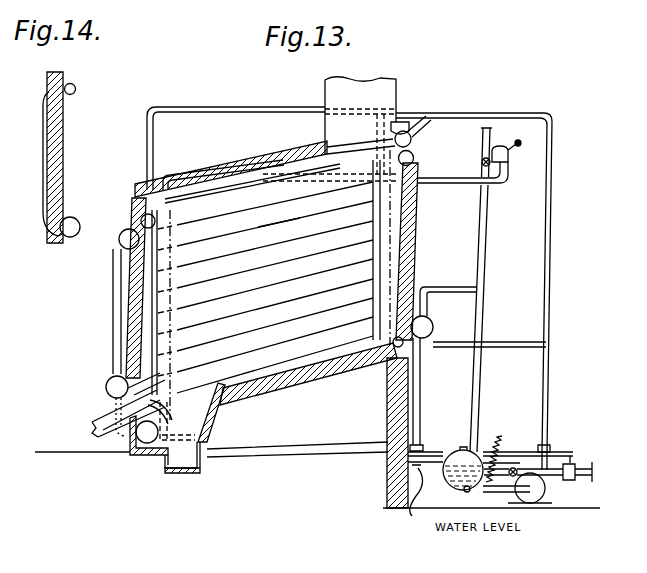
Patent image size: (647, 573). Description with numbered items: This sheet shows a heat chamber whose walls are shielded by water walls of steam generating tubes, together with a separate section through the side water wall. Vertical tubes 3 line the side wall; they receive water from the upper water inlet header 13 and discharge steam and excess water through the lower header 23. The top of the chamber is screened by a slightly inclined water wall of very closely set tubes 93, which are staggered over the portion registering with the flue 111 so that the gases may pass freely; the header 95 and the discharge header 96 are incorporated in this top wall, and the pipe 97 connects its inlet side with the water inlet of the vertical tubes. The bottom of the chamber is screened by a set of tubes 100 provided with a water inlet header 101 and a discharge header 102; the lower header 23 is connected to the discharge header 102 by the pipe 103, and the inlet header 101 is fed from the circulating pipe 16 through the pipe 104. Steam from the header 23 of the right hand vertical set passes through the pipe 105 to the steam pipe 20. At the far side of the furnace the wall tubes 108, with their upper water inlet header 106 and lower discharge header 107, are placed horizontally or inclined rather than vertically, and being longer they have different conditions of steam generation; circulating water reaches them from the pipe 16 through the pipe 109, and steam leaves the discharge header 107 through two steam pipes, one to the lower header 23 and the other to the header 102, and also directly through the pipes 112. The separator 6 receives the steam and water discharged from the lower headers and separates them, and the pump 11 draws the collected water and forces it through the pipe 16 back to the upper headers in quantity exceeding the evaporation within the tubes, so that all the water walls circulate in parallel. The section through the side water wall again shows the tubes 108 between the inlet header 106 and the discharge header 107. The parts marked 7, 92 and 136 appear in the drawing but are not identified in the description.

In FIG. 13, the tubes 3 is at (129, 313).
In FIG. 13, the steam and water separator 6 is at (450, 481).
In FIG. 13, the valve 7 is at (500, 446).
In FIG. 13, the pump 11 is at (545, 494).
In FIG. 13, the water inlet header 13 is at (141, 221).
In FIG. 13, the pipe 16 is at (552, 226).
In FIG. 13, the steam pipe 20 is at (487, 232).
In FIG. 13, the lower header 23 is at (107, 392).
In FIG. 13, the plate 92 is at (338, 166).
In FIG. 13, the tubes 93 is at (250, 168).
In FIG. 13, the header 95 is at (411, 126).
In FIG. 13, the discharge header 96 is at (119, 241).
In FIG. 13, the pipe 97 is at (235, 107).
In FIG. 13, the tubes 100 is at (221, 420).
In FIG. 13, the water inlet header 101 is at (385, 362).
In FIG. 13, the discharge header 102 is at (144, 455).
In FIG. 13, the pipe 103 is at (422, 391).
In FIG. 13, the pipe 104 is at (492, 342).
In FIG. 13, the pipe 105 is at (376, 200).
In FIG. 14, the upper water inlet header 106 is at (76, 89).
In FIG. 14, the lower or discharge header 107 is at (71, 218).
In FIG. 13, the lower or discharge header 107 is at (165, 348).
In FIG. 14, the tubes 108 is at (49, 146).
In FIG. 13, the tubes 108 is at (270, 228).
In FIG. 13, the pipe 109 is at (362, 124).
In FIG. 13, the flue 111 is at (398, 90).
In FIG. 13, the pipes 112 is at (167, 418).
In FIG. 13, the trough 136 is at (191, 473).